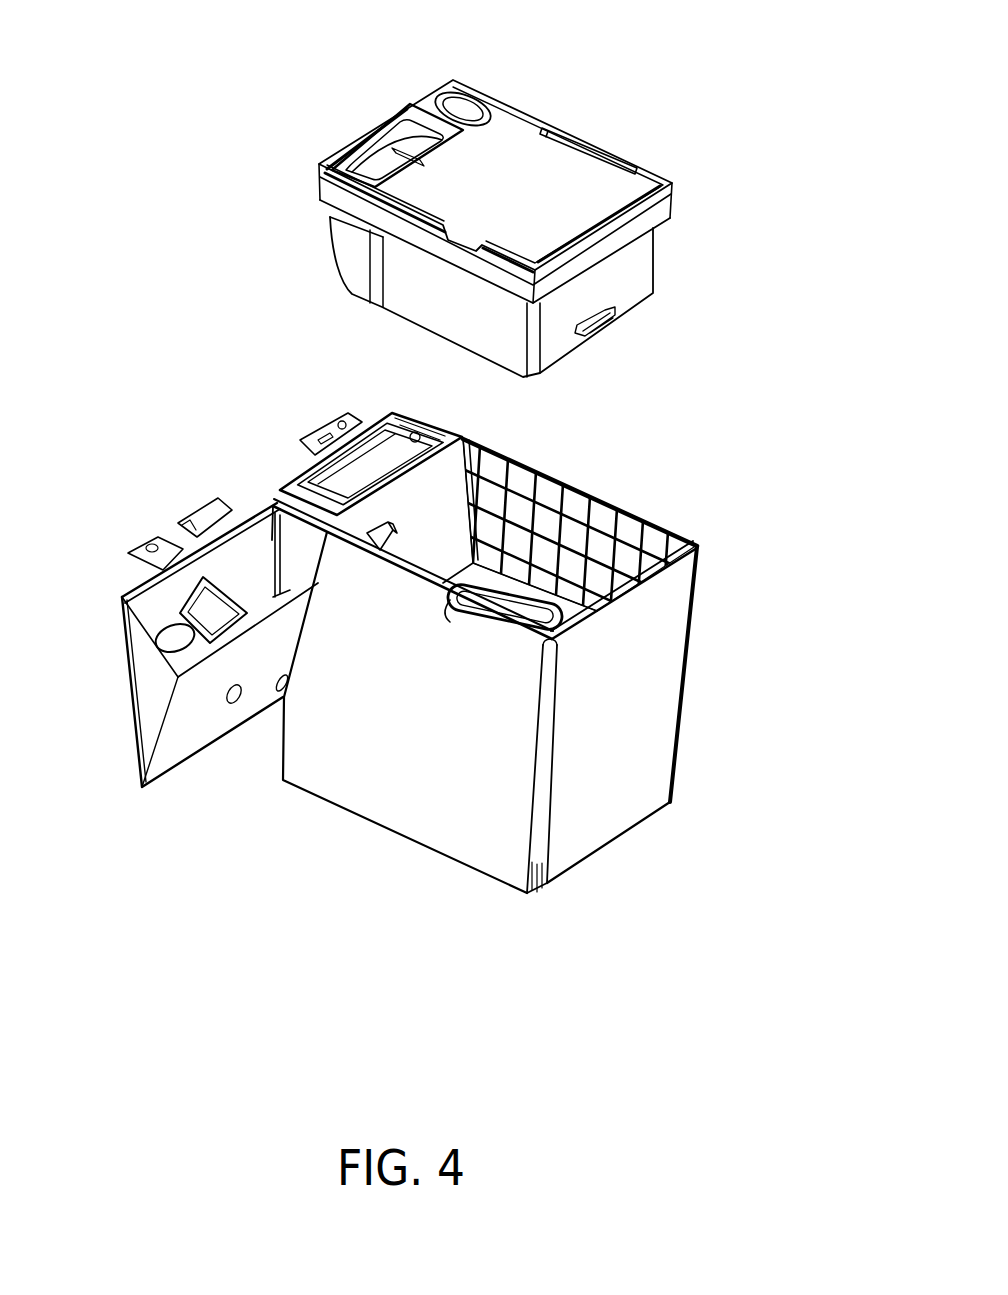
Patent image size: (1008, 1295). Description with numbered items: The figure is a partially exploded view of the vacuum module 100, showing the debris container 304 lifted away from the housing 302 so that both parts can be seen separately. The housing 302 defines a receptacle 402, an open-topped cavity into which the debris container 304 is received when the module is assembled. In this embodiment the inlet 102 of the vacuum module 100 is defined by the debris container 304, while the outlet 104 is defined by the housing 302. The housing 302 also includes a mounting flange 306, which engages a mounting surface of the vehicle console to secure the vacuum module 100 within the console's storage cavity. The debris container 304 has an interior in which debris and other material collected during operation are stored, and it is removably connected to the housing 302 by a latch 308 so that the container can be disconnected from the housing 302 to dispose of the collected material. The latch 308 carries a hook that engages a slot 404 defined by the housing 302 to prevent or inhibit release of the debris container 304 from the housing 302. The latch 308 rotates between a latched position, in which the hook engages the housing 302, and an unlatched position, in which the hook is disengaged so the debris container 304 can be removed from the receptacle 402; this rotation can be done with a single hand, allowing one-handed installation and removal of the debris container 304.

The vacuum module 100 is at (203, 120).
The inlet 102 is at (473, 97).
The outlet 104 is at (312, 455).
The housing 302 is at (590, 820).
The debris container 304 is at (543, 103).
The mounting flange 306 is at (180, 498).
The latch 308 is at (368, 118).
The receptacle 402 is at (630, 510).
The slot 404 is at (393, 527).